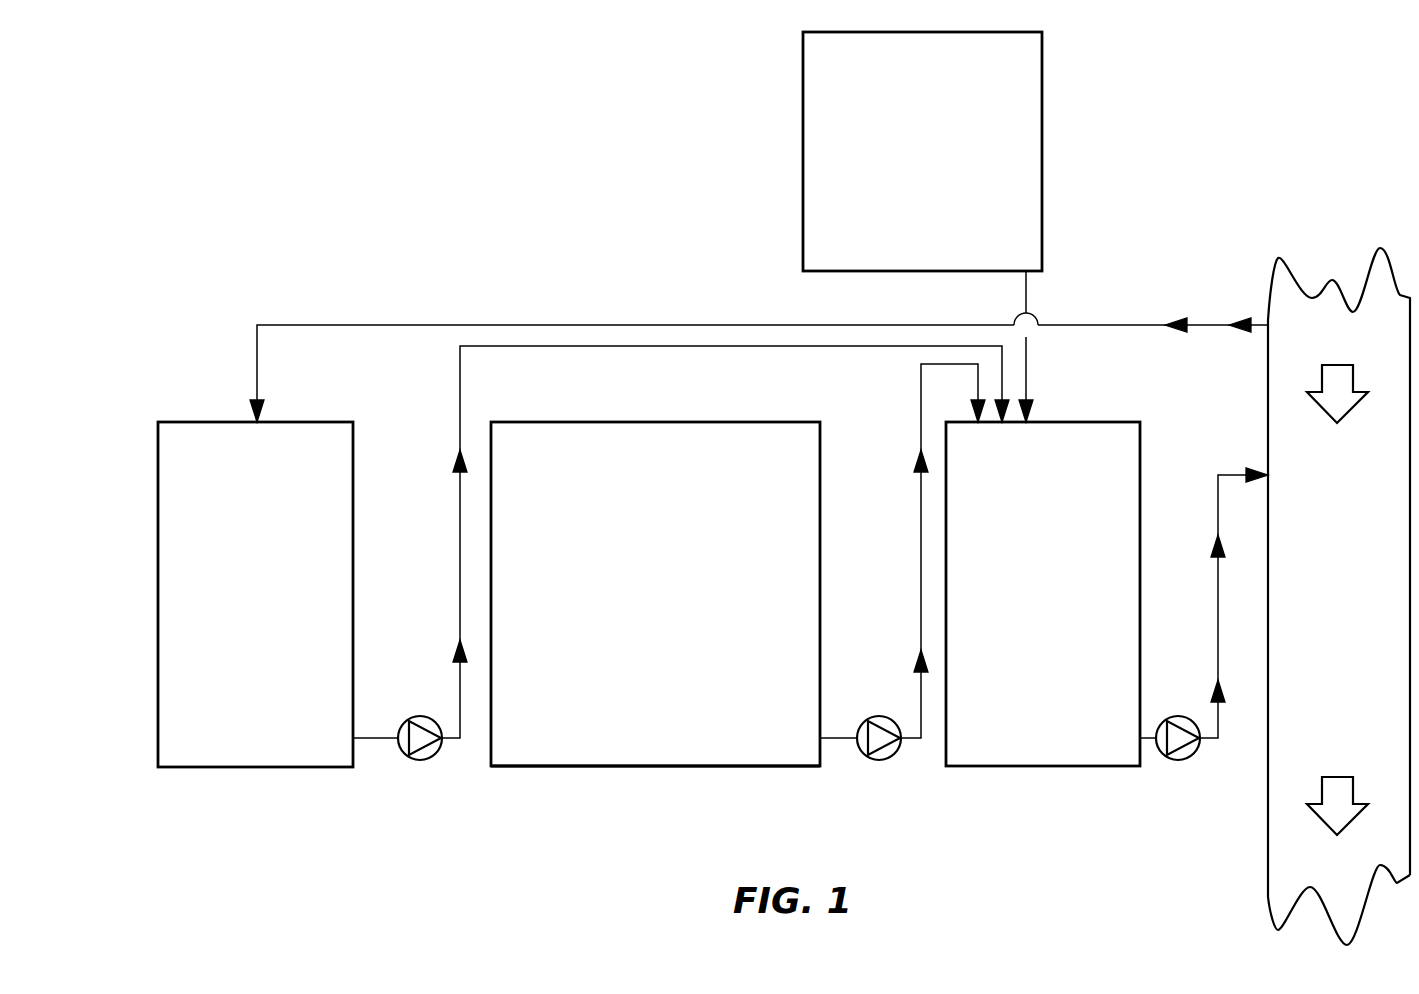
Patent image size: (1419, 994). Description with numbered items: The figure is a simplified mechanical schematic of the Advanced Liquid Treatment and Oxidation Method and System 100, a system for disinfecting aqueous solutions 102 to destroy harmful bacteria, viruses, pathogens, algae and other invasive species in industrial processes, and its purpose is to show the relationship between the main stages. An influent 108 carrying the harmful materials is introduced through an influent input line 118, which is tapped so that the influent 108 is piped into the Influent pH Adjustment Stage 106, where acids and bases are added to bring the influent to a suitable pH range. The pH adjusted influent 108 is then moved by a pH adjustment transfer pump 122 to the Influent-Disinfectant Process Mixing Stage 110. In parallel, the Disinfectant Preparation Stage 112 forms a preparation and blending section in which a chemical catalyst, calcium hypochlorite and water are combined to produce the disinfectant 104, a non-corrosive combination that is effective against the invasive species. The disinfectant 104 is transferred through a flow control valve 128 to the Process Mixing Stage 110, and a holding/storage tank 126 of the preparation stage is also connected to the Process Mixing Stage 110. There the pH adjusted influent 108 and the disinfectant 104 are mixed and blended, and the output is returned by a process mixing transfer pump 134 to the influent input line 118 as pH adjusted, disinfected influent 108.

The Advanced Liquid Treatment and Oxidation Method and System 100 is at (394, 150).
The aqueous solutions 102 is at (1292, 300).
The disinfectant 104 is at (715, 752).
The Influent pH Adjustment Stage 106 is at (190, 422).
The influent 108 is at (358, 325).
The Influent-Disinfectant Process Mixing Stage 110 is at (1020, 766).
The Disinfectant Preparation Stage 112 is at (578, 766).
The influent input line 118 is at (1268, 313).
The pH adjustment transfer pump 122 is at (422, 760).
The holding/storage tank 126 is at (803, 128).
The flow control valve 128 is at (882, 760).
The process mixing transfer pump 134 is at (1180, 760).